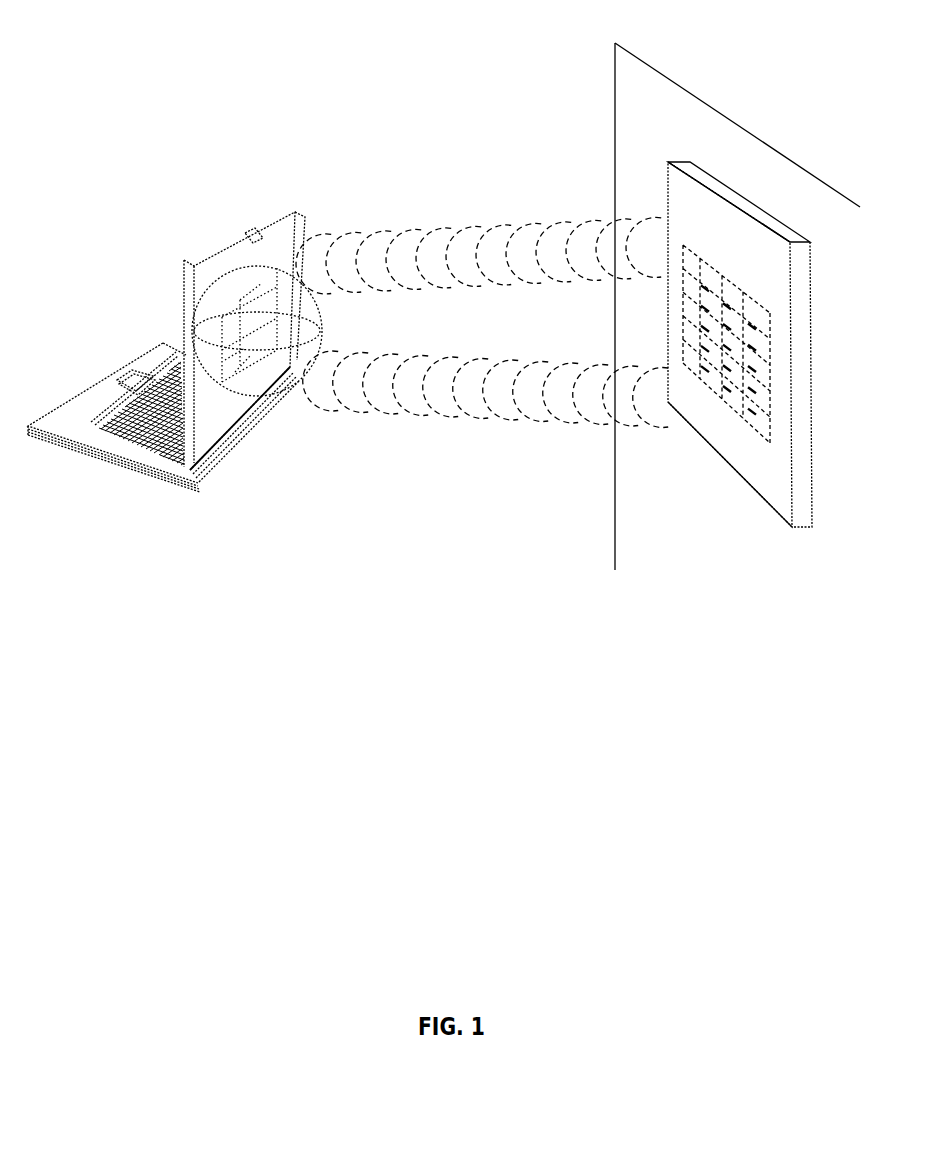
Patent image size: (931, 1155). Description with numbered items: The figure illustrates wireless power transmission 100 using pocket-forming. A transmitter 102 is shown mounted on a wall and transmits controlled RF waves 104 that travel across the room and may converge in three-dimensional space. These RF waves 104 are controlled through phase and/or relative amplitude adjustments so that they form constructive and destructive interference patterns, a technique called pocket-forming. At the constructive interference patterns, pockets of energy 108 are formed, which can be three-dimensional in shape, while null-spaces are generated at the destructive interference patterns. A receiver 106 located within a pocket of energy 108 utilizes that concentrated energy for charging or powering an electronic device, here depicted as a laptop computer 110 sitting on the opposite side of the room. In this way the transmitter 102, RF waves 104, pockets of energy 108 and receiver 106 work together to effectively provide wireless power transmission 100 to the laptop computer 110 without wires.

The wireless power transmission 100 is at (148, 125).
The transmitter 102 is at (718, 220).
The RF waves 104 is at (427, 237).
The receiver 106 is at (233, 368).
The pockets of energy 108 is at (277, 268).
The laptop computer 110 is at (88, 452).